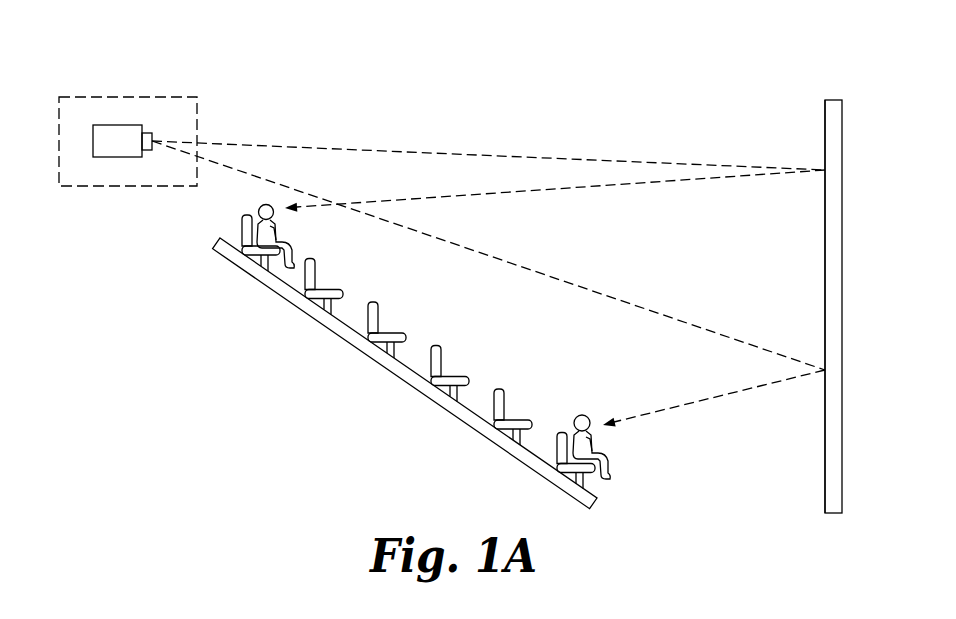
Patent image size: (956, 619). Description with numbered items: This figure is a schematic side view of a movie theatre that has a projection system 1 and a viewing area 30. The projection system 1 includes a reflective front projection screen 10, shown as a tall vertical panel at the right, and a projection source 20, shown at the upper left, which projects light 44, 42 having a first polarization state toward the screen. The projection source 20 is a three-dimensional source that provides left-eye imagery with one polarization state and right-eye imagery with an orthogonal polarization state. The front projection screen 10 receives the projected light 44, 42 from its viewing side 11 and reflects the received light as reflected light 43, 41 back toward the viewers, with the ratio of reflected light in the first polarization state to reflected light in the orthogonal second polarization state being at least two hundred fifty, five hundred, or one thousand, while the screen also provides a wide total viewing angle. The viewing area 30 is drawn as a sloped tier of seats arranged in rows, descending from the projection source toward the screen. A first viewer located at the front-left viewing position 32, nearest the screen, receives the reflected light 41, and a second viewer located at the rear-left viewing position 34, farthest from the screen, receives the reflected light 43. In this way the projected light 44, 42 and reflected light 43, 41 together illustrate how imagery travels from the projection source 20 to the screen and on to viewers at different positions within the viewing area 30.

The projection system 1 is at (602, 53).
The front projection screen 10 is at (832, 97).
The viewing side 11 is at (825, 136).
The projection source 20 is at (107, 158).
The viewing area 30 is at (415, 390).
The front-left viewing position 32 is at (608, 466).
The rear-left viewing position 34 is at (290, 247).
The reflected light 41 is at (670, 408).
The projected light 42 is at (585, 290).
The reflected light 43 is at (522, 195).
The projected light 44 is at (511, 158).